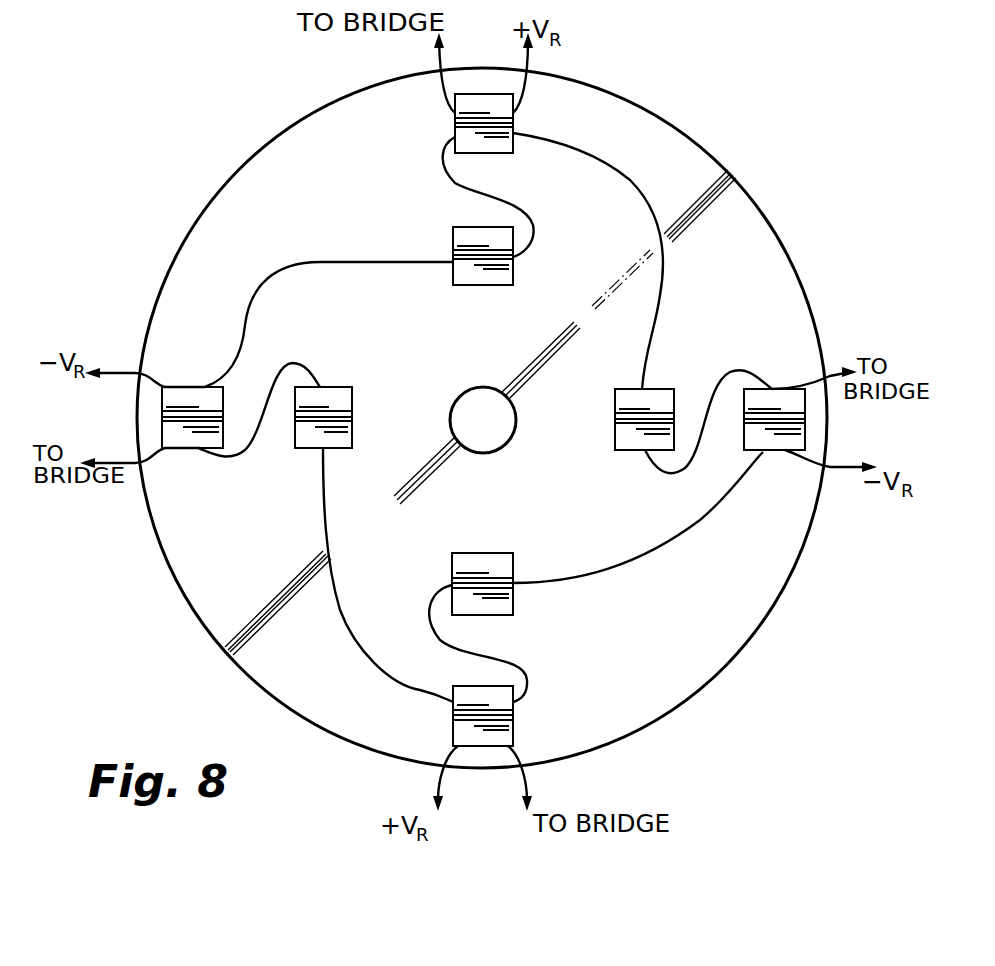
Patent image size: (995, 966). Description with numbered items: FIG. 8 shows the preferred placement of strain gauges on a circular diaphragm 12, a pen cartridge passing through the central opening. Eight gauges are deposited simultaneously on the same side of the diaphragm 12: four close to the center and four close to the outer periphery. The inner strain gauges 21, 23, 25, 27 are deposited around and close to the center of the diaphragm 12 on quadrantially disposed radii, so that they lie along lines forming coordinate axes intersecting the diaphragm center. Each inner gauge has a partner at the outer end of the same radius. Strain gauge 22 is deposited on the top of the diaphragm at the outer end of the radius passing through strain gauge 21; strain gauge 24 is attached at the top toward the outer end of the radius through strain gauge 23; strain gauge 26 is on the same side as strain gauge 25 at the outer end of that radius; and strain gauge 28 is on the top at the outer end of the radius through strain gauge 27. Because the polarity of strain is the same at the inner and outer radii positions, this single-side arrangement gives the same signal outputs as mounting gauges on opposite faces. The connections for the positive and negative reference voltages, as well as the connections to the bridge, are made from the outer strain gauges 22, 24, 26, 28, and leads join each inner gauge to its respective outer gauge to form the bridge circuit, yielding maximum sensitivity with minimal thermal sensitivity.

The diaphragm disc 12 is at (736, 178).
The strain gauge 21 is at (349, 372).
The strain gauge 22 is at (223, 412).
The strain gauge 23 is at (657, 389).
The strain gauge 24 is at (746, 428).
The strain gauge 25 is at (462, 227).
The strain gauge 26 is at (495, 154).
The strain gauge 27 is at (513, 597).
The strain gauge 28 is at (472, 686).